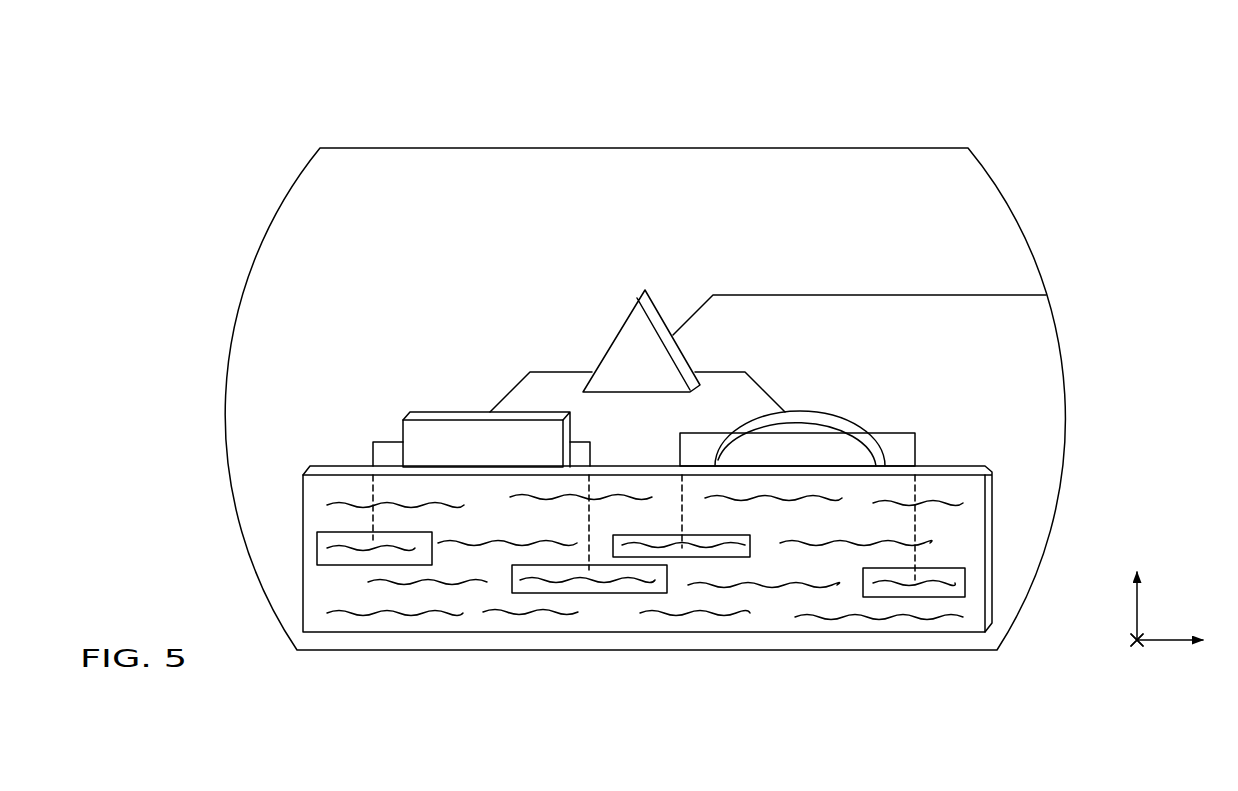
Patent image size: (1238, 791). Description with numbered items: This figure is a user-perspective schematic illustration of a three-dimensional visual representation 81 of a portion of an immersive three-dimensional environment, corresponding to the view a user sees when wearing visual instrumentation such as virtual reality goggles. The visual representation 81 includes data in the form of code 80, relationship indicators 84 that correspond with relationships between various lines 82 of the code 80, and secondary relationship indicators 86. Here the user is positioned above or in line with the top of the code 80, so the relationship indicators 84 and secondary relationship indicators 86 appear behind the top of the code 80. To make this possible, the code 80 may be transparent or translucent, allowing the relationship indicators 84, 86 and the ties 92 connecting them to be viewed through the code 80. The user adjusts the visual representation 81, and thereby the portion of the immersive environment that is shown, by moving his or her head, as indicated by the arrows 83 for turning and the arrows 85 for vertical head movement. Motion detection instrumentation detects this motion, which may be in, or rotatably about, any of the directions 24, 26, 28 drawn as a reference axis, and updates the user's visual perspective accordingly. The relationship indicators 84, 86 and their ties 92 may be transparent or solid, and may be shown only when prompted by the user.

The direction 24 is at (1134, 610).
The direction 26 is at (1163, 640).
The direction 28 is at (1135, 644).
The code 80 is at (956, 456).
The 3-D visual representation 81 is at (1012, 208).
The lines of the code 82 is at (358, 570).
The arrows 83 is at (207, 395).
The relationship indicators 84 is at (447, 397).
The arrows 85 is at (645, 130).
The secondary relationship indicators 86 is at (605, 328).
The ties 92 is at (373, 493).